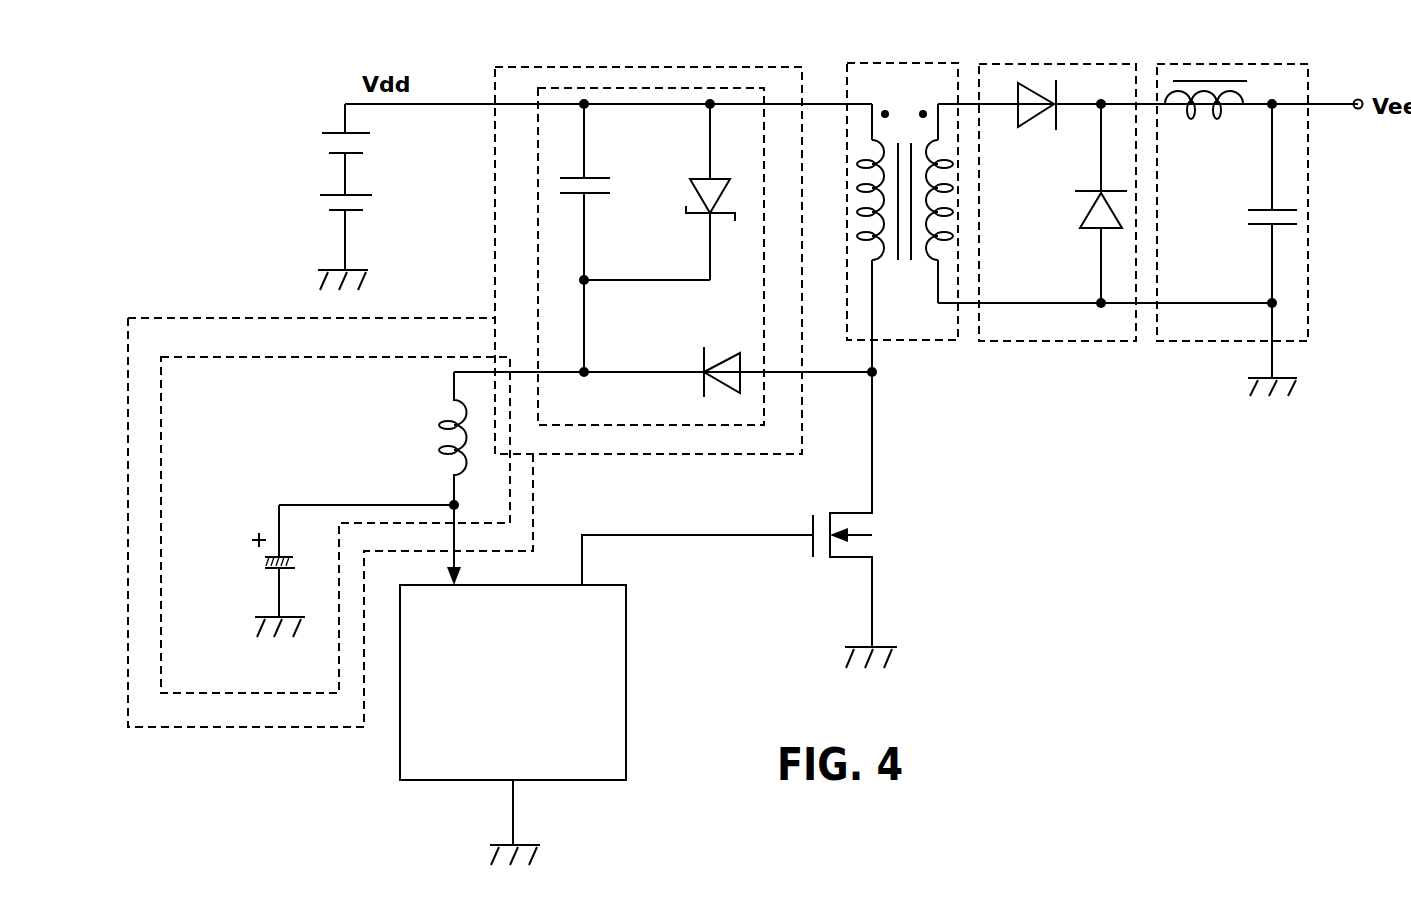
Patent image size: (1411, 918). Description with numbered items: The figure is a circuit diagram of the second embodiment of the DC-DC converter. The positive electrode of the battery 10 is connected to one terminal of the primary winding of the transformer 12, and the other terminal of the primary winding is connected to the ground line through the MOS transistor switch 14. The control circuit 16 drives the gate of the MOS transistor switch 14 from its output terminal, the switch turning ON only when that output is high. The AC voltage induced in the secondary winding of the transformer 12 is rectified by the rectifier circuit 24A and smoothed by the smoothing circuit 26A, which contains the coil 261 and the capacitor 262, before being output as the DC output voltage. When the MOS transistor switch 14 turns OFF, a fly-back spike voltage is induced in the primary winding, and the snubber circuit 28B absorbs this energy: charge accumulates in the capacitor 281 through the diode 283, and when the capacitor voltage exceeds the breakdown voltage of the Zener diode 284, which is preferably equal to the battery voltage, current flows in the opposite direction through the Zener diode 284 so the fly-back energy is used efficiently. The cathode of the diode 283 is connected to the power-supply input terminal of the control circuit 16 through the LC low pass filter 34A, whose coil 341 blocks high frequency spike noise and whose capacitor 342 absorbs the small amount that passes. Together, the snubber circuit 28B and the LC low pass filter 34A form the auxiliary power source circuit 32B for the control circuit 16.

The battery 10 is at (338, 130).
The transformer 12 is at (898, 63).
The MOS transistor switch 14 is at (856, 557).
The control circuit 16 is at (626, 716).
The rectifier circuit 24A is at (1008, 64).
The smoothing circuit 26A is at (1293, 64).
The coil 261 is at (1192, 108).
The capacitor 262 is at (1262, 226).
The snubber circuit 28B is at (672, 88).
The capacitor 281 is at (595, 178).
The diode 283 is at (704, 372).
The Zener diode 284 is at (694, 190).
The auxiliary power source circuit 32B is at (496, 67).
The LC low pass filter 34A is at (128, 372).
The coil 341 is at (447, 428).
The capacitor 342 is at (275, 569).